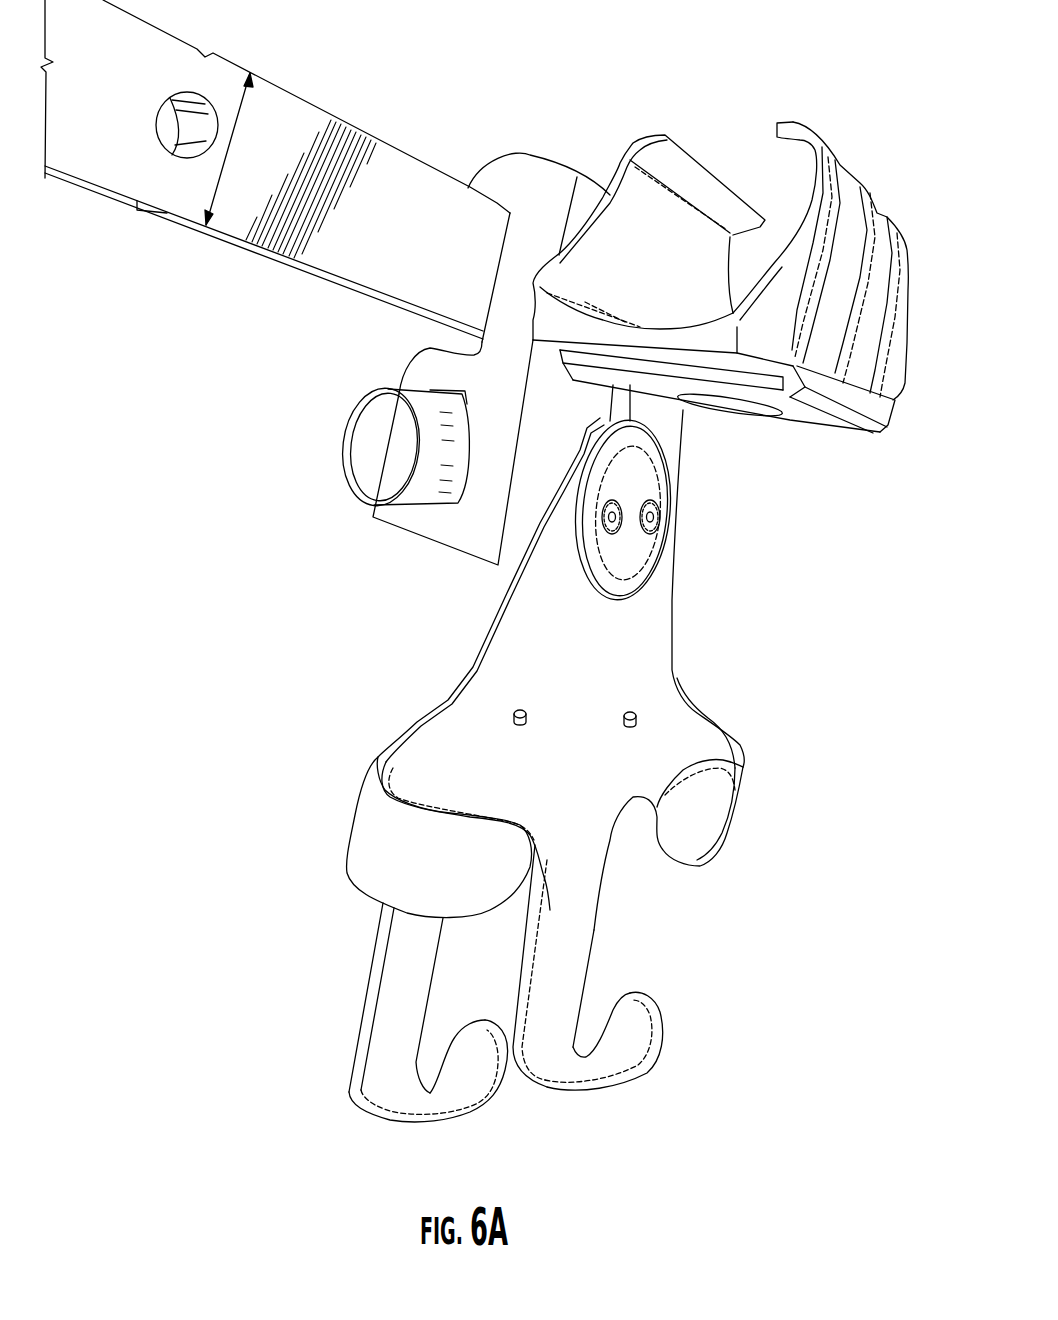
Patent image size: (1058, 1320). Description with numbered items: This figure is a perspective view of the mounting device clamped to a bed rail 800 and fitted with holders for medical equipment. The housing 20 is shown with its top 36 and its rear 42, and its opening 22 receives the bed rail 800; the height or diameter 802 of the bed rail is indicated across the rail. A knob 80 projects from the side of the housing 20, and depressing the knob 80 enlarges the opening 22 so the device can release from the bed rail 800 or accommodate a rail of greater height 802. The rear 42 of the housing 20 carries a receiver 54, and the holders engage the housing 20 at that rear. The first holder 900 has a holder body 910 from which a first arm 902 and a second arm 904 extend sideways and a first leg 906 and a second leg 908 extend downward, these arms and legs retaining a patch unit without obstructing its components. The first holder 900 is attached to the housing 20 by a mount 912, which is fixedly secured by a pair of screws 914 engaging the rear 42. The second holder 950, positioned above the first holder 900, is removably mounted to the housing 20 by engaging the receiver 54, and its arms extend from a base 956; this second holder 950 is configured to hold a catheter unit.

The bed rail 800 is at (277, 97).
The height (or diameter) of bedrail 802 is at (240, 107).
The top 36 is at (527, 153).
The opening 22 is at (437, 332).
The housing 20 is at (433, 537).
The knob 80 is at (342, 444).
The receiver 54 is at (620, 410).
The rear 42 is at (667, 418).
The base 956 is at (807, 420).
The second holder 950 is at (903, 302).
The first holder 900 is at (542, 778).
The first arm 902 is at (368, 830).
The second arm 904 is at (710, 807).
The first leg 906 is at (472, 1092).
The second leg 908 is at (640, 1043).
The holder body 910 is at (567, 779).
The mount 912 is at (618, 567).
The screws 914 is at (650, 517).